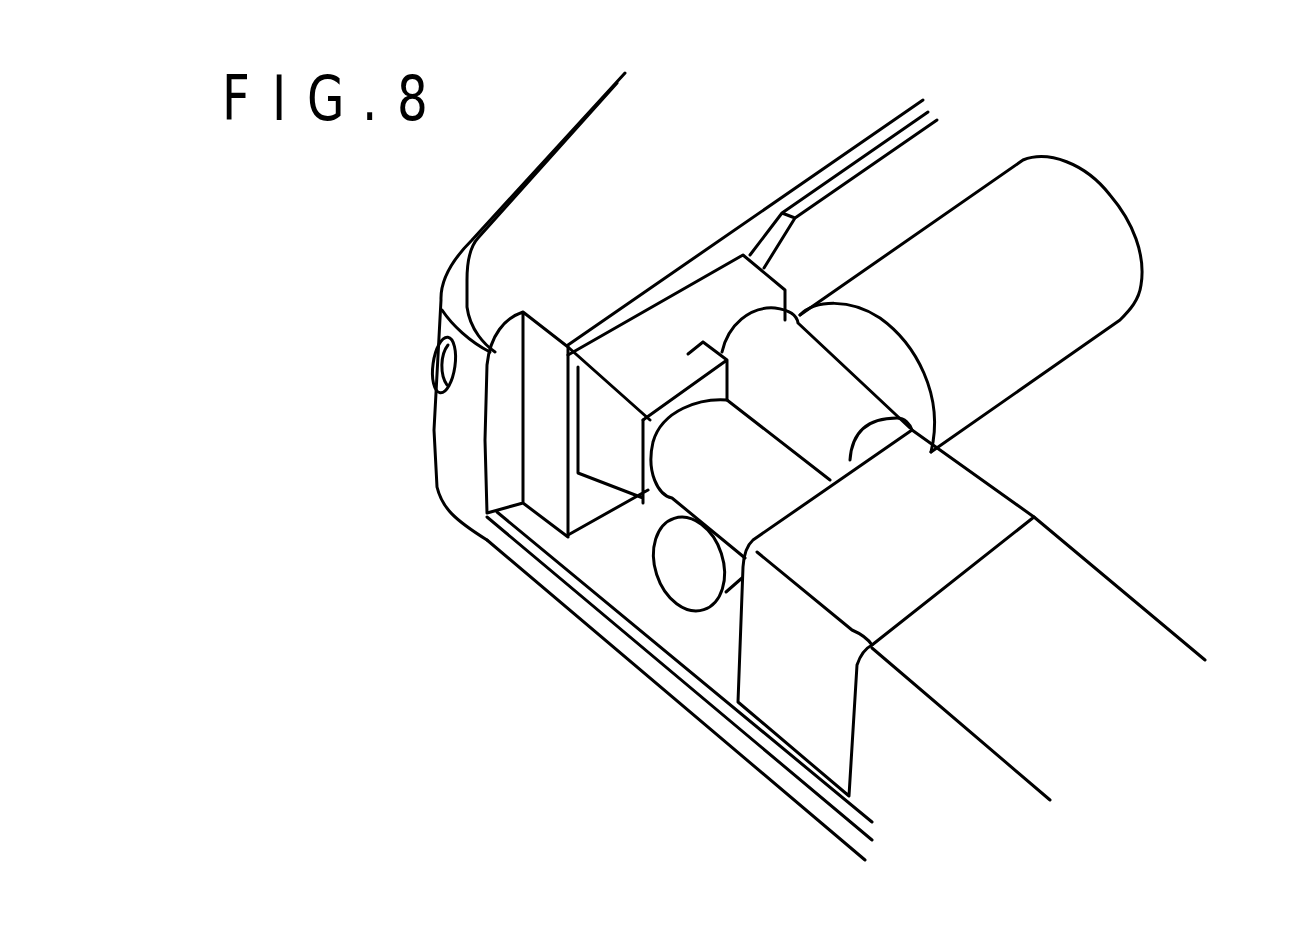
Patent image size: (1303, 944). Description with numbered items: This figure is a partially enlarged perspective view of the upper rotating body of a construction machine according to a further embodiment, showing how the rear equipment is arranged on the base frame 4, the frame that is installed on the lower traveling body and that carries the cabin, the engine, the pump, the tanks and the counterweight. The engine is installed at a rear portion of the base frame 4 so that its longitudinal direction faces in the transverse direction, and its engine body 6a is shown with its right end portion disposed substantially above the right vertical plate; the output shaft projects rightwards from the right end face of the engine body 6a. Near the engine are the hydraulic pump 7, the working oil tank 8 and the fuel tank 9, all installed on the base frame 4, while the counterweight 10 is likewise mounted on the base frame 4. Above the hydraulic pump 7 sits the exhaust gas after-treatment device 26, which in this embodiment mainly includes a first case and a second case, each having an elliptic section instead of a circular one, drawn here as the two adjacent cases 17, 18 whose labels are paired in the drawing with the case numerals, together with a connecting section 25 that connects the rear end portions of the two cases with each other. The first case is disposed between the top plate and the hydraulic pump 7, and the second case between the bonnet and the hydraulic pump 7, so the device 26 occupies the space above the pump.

The base frame 4 is at (720, 737).
The engine body 6a is at (1120, 290).
The hydraulic pump 7 is at (673, 577).
The working oil tank 8 is at (978, 517).
The fuel tank 9 is at (1133, 628).
The counterweight 10 is at (533, 208).
The front cylindrical member 17 is at (758, 515).
The rear cylindrical member 18 is at (860, 397).
The connecting section 25 is at (684, 313).
The exhaust gas after-treatment device 26 is at (803, 270).